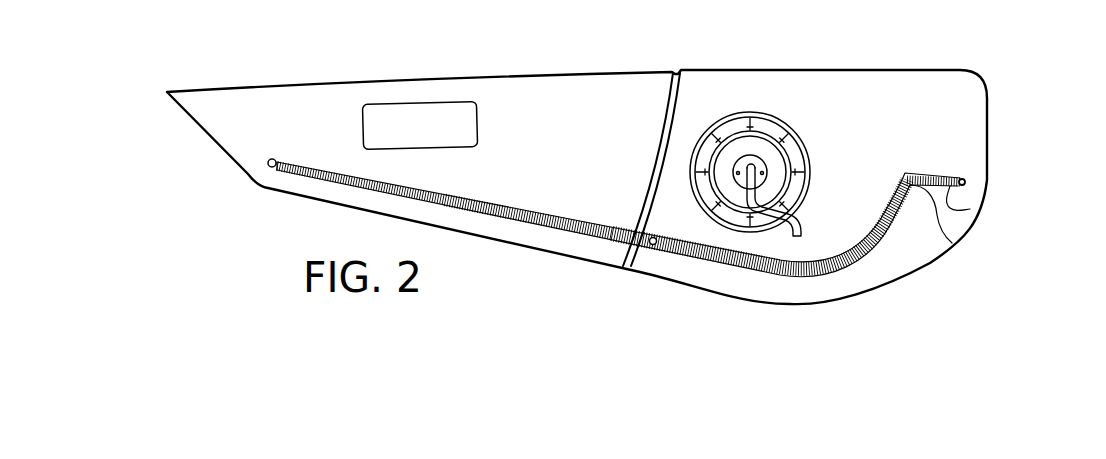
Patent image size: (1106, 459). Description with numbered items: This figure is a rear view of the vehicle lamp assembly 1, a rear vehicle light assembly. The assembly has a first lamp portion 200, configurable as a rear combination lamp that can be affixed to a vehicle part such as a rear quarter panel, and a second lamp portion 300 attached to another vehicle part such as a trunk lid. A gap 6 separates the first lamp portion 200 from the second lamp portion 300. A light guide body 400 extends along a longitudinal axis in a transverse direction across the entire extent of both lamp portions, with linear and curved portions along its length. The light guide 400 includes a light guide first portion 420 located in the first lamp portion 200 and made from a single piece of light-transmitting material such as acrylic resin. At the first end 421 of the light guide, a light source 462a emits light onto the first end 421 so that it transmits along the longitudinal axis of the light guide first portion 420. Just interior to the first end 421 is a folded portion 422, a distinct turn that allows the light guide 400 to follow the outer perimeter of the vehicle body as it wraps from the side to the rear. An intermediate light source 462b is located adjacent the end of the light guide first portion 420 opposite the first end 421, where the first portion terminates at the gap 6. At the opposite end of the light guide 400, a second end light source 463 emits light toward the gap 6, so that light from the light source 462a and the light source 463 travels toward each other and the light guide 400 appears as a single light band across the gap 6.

The vehicle lamp assembly 1 is at (219, 63).
The gap 6 is at (673, 71).
The first lamp portion 200 is at (883, 71).
The second lamp portion 300 is at (420, 98).
The light guide body 400 is at (532, 213).
The light guide first portion 420 is at (818, 263).
The first end 421 is at (970, 209).
The folded portion 422 is at (952, 243).
The light source 462a is at (966, 182).
The intermediate light source 462b is at (653, 246).
The second end light source 463 is at (268, 163).